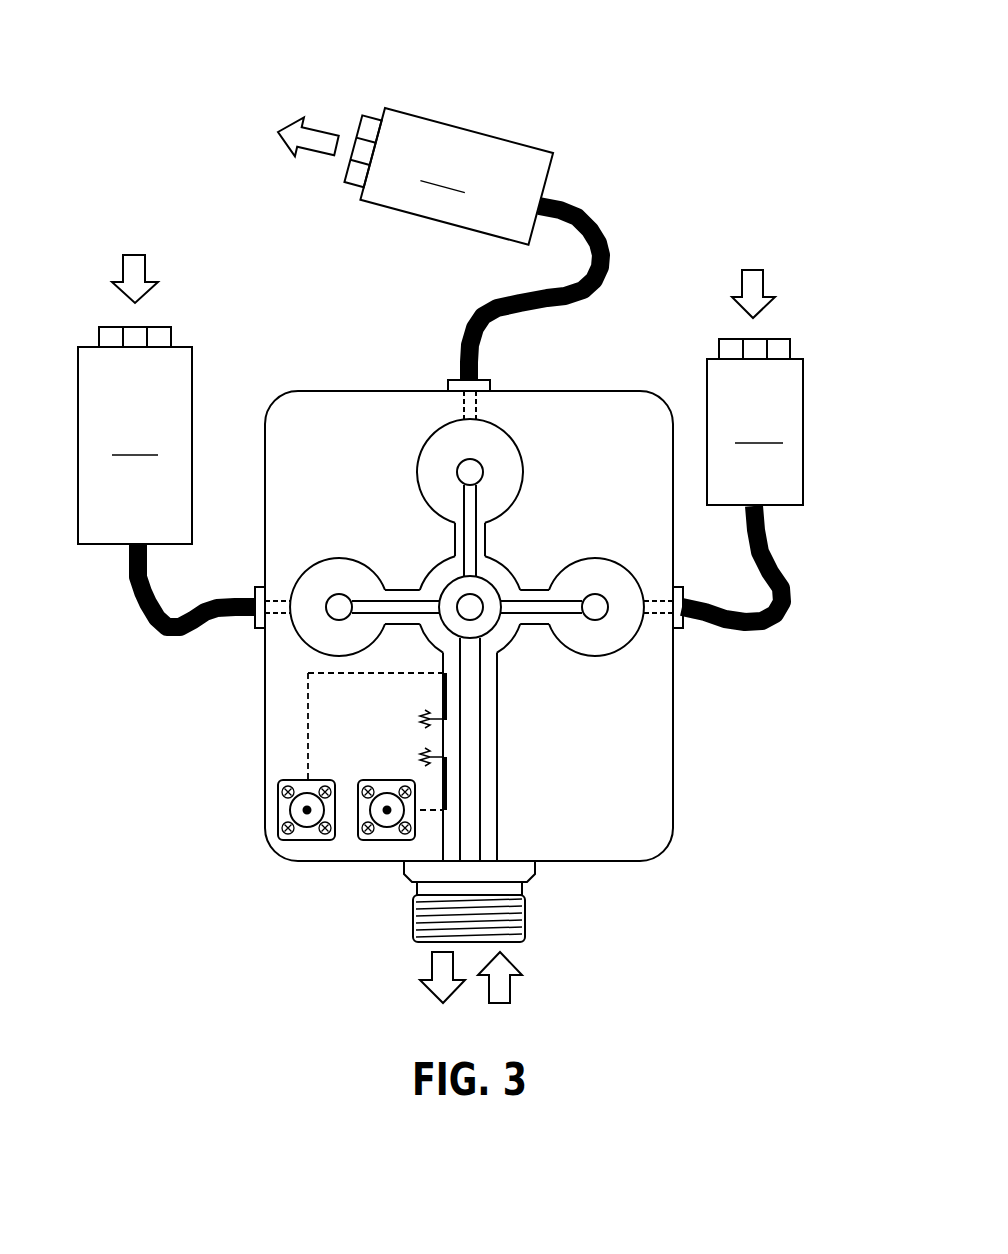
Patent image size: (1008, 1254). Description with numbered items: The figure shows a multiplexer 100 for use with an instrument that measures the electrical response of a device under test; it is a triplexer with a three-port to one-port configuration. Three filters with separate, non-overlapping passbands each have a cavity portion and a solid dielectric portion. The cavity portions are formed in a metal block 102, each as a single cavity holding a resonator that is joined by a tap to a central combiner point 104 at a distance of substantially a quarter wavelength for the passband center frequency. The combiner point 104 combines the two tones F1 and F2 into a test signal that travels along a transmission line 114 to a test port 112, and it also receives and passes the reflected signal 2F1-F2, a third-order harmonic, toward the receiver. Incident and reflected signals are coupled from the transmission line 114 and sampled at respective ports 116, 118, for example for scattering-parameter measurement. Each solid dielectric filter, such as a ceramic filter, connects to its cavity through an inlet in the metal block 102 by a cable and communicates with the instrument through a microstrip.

The multiplexer 100 is at (743, 128).
The metal block 102 is at (640, 425).
The combiner point 104 is at (470, 607).
The test port 112 is at (548, 905).
The transmission line 114 is at (472, 805).
The port 116 is at (252, 832).
The port 118 is at (345, 870).